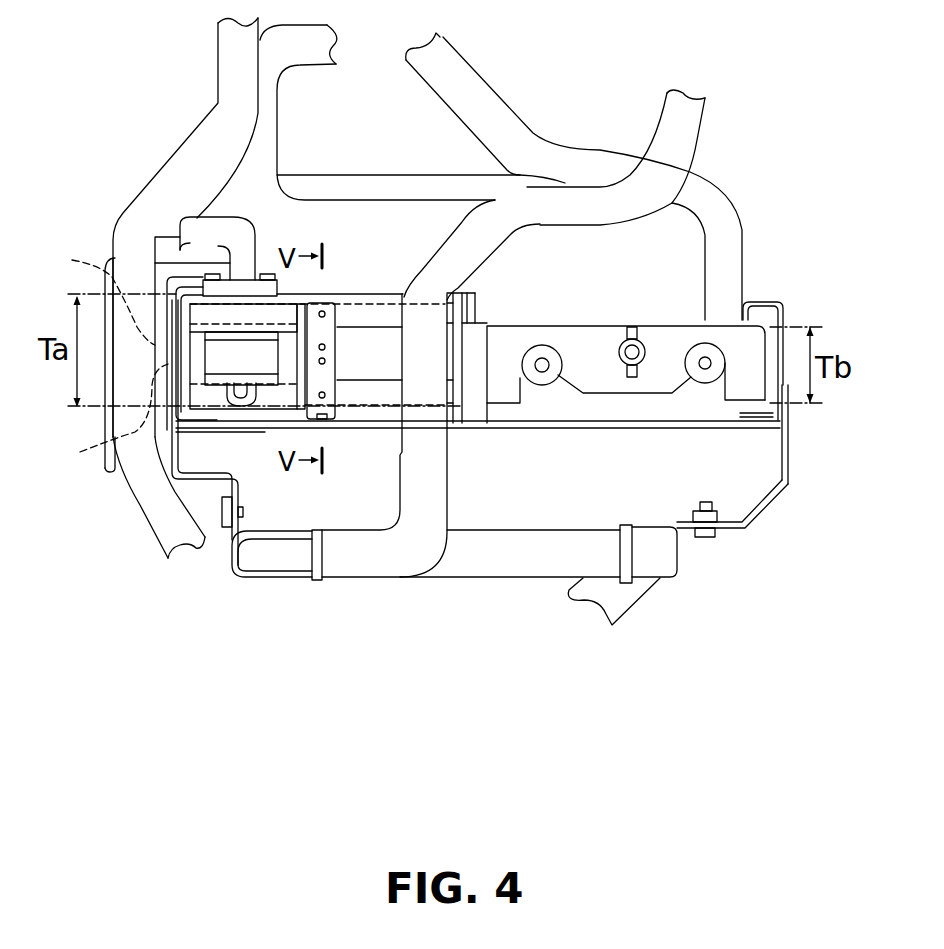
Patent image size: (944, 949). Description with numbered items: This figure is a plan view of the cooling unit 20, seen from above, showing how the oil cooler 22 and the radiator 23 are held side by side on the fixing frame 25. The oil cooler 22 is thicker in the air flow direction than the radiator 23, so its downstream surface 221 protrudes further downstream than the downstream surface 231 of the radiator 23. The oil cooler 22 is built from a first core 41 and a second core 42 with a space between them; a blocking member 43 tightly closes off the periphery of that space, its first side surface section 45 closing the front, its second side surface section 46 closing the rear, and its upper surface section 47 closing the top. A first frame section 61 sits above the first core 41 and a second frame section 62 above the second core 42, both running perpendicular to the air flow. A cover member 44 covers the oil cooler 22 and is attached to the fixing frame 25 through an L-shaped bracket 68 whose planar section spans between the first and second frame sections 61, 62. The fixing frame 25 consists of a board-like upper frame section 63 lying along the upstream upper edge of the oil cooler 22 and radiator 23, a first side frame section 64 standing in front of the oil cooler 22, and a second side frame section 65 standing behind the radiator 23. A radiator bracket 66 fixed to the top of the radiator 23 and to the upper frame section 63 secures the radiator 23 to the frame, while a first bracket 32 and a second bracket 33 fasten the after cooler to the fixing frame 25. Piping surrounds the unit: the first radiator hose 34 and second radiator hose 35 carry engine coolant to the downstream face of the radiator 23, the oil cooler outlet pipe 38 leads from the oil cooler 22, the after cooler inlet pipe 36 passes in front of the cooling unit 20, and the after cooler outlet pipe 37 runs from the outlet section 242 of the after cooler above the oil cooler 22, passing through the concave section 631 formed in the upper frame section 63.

The cooling unit 20 is at (478, 590).
The oil cooler 22 is at (240, 417).
The radiator 23 is at (745, 348).
The fixing frame 25 is at (738, 450).
The first bracket 32 is at (762, 513).
The second bracket 33 is at (167, 542).
The first radiator hose 34 is at (713, 197).
The second radiator hose 35 is at (232, 172).
The after cooler inlet pipe 36 is at (150, 495).
The after cooler outlet pipe 37 is at (397, 553).
The oil cooler outlet pipe 38 is at (168, 250).
The first core 41 is at (368, 295).
The second core 42 is at (378, 312).
The blocking member 43 is at (104, 420).
The cover member 44 is at (387, 300).
The first side surface section 45 is at (96, 355).
The second side surface section 46 is at (483, 320).
The upper surface section 47 is at (290, 372).
The first frame section 61 is at (393, 290).
The second frame section 62 is at (331, 358).
The upper frame section 63 is at (500, 429).
The first side frame section 64 is at (167, 318).
The second side frame section 65 is at (783, 312).
The radiator bracket 66 is at (612, 414).
The bracket 68 is at (352, 416).
The surface in the downstream side of the oil cooler 221 is at (337, 287).
The surface in the downstream side of the radiator 231 is at (575, 319).
The outlet section 242 is at (257, 556).
The concave section 631 is at (458, 432).